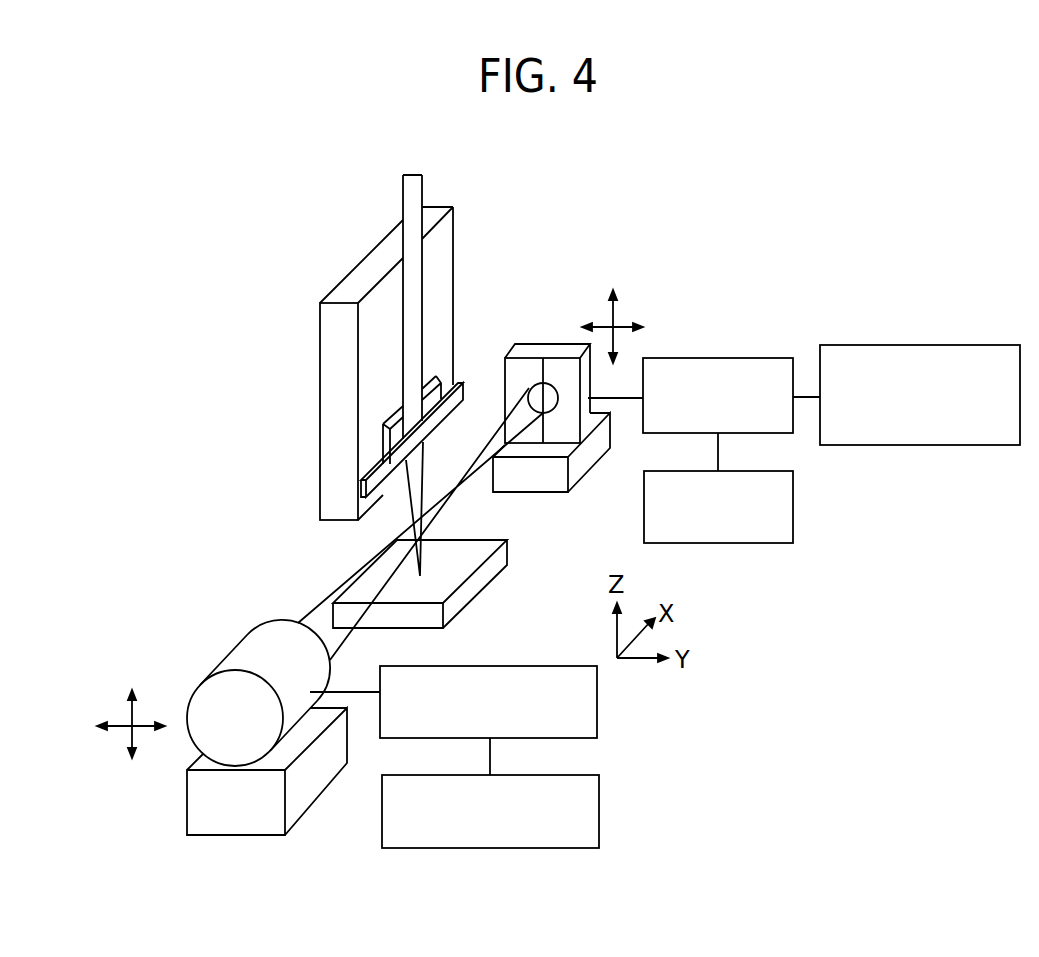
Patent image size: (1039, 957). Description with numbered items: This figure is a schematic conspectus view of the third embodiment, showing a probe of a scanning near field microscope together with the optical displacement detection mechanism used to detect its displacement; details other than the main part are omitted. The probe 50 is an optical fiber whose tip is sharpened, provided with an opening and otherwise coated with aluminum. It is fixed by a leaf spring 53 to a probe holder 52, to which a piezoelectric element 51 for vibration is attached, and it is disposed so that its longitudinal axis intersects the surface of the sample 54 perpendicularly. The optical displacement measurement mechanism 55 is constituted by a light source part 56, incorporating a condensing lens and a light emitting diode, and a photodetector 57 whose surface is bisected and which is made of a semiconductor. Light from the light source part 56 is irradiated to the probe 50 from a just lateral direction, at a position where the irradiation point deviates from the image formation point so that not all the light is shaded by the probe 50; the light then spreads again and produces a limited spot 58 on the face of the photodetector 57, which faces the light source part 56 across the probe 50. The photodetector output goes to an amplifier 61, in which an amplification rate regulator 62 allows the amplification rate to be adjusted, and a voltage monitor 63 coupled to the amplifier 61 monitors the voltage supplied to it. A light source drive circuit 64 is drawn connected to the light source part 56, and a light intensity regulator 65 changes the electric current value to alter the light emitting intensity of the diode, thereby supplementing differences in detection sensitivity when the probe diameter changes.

The probe 50 is at (415, 506).
The piezoelectric element 51 is at (397, 428).
The probe holder 52 is at (335, 352).
The leaf spring 53 is at (373, 495).
The sample 54 is at (448, 570).
The optical displacement measurement mechanism 55 is at (240, 595).
The light source part 56 is at (248, 650).
The photodetector 57 is at (517, 367).
The spot 58 is at (552, 393).
The amplifier 61 is at (755, 357).
The amplification rate regulator 62 is at (978, 343).
The voltage monitor 63 is at (757, 545).
The light source drive circuit 64 is at (597, 719).
The light intensity regulator 65 is at (599, 813).